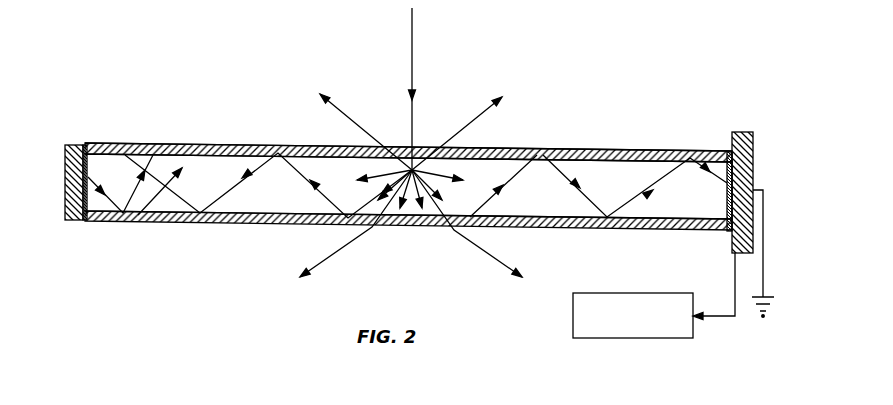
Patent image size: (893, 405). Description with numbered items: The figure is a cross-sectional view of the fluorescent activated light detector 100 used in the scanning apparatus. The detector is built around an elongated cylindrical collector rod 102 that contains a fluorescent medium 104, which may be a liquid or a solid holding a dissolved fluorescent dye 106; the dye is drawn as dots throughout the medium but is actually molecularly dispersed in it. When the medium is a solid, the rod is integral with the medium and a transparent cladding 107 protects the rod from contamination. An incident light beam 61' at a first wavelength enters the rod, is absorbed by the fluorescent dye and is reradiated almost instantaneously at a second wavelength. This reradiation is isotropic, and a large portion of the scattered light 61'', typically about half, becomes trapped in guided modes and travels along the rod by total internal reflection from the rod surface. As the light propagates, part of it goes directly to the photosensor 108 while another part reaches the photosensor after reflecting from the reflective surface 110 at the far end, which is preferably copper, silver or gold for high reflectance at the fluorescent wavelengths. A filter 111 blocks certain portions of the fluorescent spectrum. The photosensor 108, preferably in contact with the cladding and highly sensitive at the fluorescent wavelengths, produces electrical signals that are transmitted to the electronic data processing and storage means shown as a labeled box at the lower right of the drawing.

The fluorescent activated light detector 100 is at (556, 98).
The collector rod 102 is at (183, 121).
The fluorescent medium 104 is at (640, 153).
The fluorescent dye 106 is at (270, 200).
The transparent cladding 107 is at (262, 117).
The photosensor 108 is at (743, 132).
The reflective surface 110 is at (67, 143).
The filter 111 is at (716, 216).
The incident light beam 61' is at (437, 89).
The scattered light 61'' is at (407, 212).